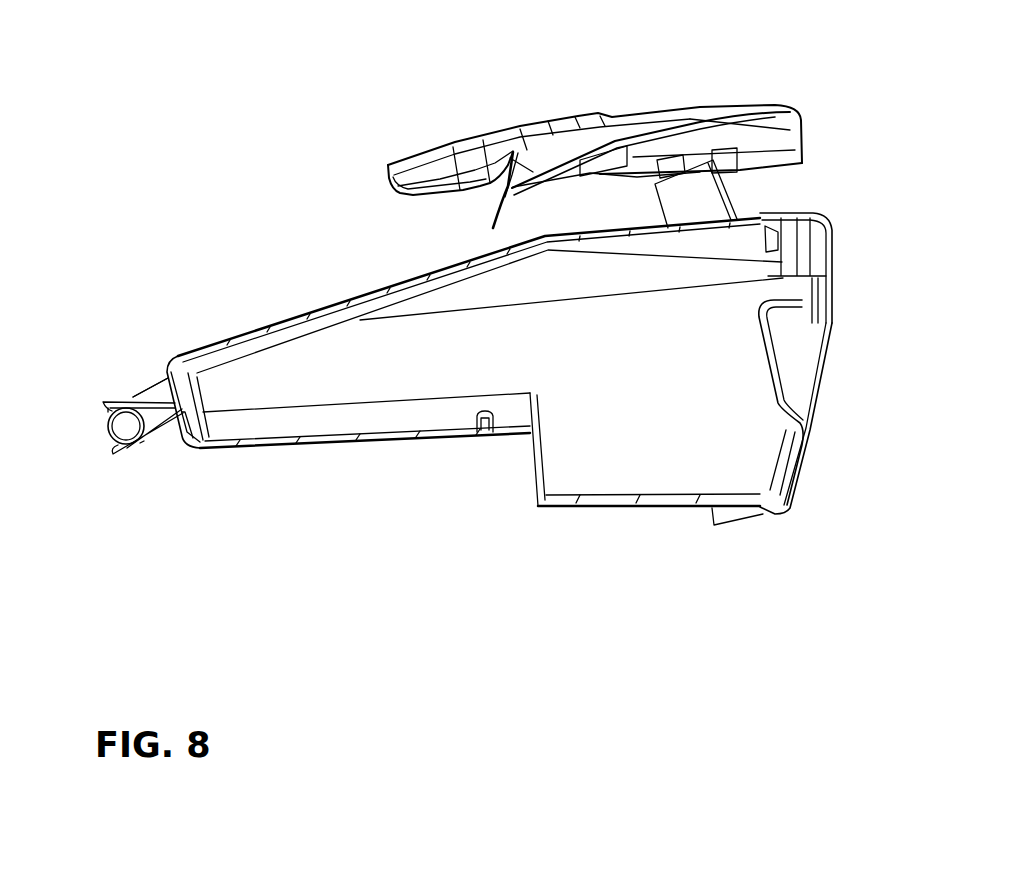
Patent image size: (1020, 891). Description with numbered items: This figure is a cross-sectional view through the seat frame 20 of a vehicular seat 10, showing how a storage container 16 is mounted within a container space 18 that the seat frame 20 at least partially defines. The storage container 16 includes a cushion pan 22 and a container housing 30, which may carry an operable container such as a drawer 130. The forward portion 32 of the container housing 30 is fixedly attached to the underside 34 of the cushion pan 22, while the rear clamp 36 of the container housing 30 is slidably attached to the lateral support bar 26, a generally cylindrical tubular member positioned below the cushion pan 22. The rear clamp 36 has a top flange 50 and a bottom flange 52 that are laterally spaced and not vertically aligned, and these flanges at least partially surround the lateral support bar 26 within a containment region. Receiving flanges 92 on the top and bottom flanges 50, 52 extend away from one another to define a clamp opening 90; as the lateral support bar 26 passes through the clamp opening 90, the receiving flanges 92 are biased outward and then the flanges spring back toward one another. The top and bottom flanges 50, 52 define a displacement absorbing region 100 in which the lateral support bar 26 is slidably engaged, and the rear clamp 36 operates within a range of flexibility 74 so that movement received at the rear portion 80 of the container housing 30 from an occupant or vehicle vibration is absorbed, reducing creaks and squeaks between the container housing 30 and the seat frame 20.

The vehicular seat 10 is at (707, 64).
The storage container 16 is at (387, 457).
The container space 18 is at (396, 209).
The seat frame 20 is at (779, 94).
The cushion pan 22 is at (423, 162).
The lateral support bar 26 is at (92, 442).
The container housing 30 is at (364, 285).
The forward portion 32 is at (735, 210).
The underside 34 is at (740, 148).
The rear clamp 36 is at (131, 385).
The top flange 50 is at (117, 397).
The bottom flange 52 is at (133, 448).
The range of flexibility 74 is at (150, 364).
The rear portion 80 is at (186, 364).
The clamp opening 90 is at (92, 415).
The receiving flange 92 is at (110, 452).
The displacement absorbing region 100 is at (164, 456).
The drawer 130 is at (798, 417).